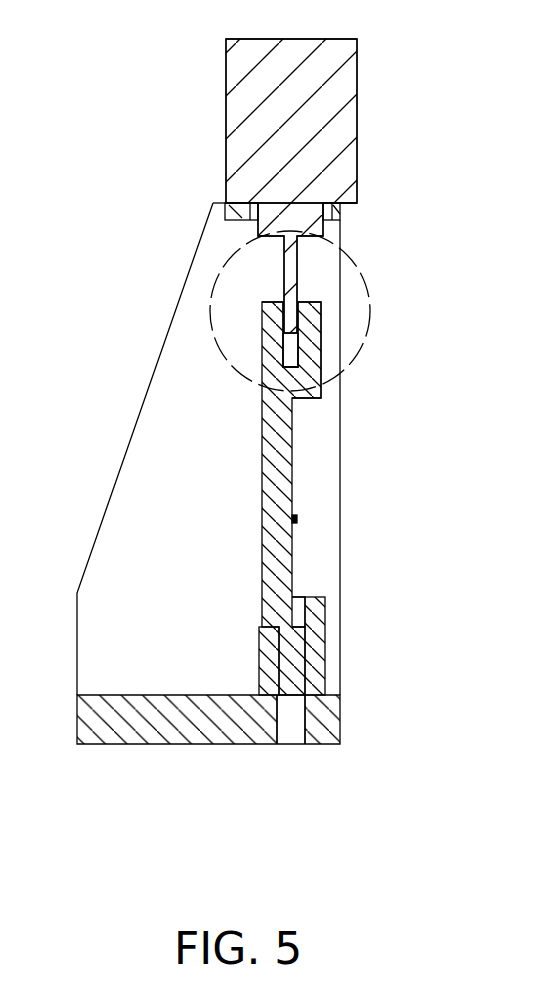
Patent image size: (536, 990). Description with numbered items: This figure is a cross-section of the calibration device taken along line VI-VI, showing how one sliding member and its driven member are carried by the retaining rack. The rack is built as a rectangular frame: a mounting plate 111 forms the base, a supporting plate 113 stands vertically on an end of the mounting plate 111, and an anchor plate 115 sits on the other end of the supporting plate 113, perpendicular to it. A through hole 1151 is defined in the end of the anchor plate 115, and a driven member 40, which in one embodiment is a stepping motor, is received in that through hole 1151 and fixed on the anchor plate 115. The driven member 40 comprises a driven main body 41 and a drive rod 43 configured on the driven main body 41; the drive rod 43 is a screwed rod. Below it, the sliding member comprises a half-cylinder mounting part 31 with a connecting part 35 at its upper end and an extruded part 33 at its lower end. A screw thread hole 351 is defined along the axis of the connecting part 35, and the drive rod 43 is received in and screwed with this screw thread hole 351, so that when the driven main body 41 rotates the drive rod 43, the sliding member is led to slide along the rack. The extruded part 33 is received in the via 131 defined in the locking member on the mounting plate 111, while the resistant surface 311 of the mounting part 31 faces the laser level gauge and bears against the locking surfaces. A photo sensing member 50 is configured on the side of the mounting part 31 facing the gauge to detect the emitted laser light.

The driven member 40 is at (435, 83).
The driven main body 41 is at (303, 122).
The drive rod 43 is at (293, 265).
The through hole 1151 is at (213, 203).
The anchor plate 115 is at (222, 221).
The supporting plate 113 is at (157, 470).
The section line VI- VI is at (368, 336).
The mounting part 31 is at (291, 465).
The connecting part 35 is at (292, 348).
The screw thread hole 351 is at (310, 390).
The photo sensing member 50 is at (296, 520).
The resistant surface 311 is at (293, 548).
The extruded part 33 is at (290, 637).
The mounting plate 111 is at (157, 722).
The via 131 is at (292, 725).